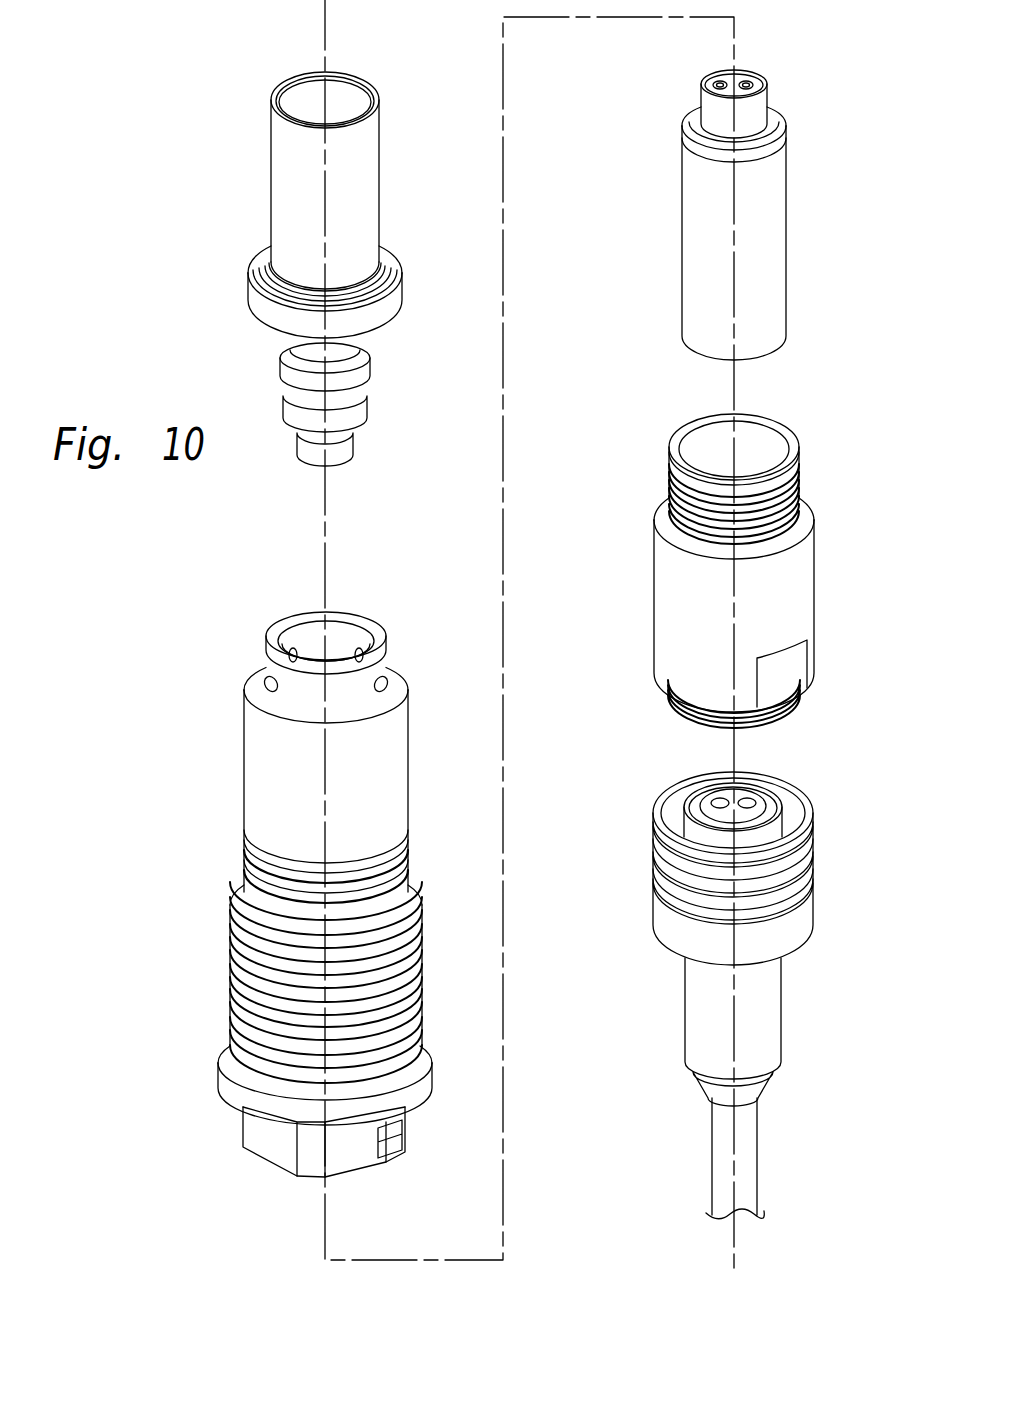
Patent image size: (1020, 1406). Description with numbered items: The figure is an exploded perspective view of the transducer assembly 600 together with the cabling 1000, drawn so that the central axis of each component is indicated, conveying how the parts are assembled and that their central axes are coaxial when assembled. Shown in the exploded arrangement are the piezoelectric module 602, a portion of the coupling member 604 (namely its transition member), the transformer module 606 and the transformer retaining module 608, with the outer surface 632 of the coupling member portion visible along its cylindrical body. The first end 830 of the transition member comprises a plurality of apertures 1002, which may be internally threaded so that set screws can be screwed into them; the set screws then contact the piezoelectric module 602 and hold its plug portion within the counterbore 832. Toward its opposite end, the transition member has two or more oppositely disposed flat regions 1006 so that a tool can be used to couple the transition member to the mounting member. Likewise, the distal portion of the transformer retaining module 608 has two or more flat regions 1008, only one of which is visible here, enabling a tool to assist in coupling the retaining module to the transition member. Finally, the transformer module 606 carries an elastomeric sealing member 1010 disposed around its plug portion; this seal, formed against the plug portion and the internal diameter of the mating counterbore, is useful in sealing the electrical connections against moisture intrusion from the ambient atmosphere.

The transducer assembly 600 is at (147, 676).
The piezoelectric module 602 is at (248, 160).
The coupling member 604 is at (226, 779).
The transformer module 606 is at (657, 213).
The transformer retaining module 608 is at (640, 570).
The outer surface of housing 632 is at (410, 768).
The first end of the transition member 830 is at (258, 615).
The counterbore 832 is at (340, 632).
The cabling 1000 is at (638, 845).
The apertures 1002 is at (272, 679).
The flat regions 1006 is at (277, 1146).
The flat regions 1008 is at (790, 668).
The elastomeric sealing member 1010 is at (773, 128).